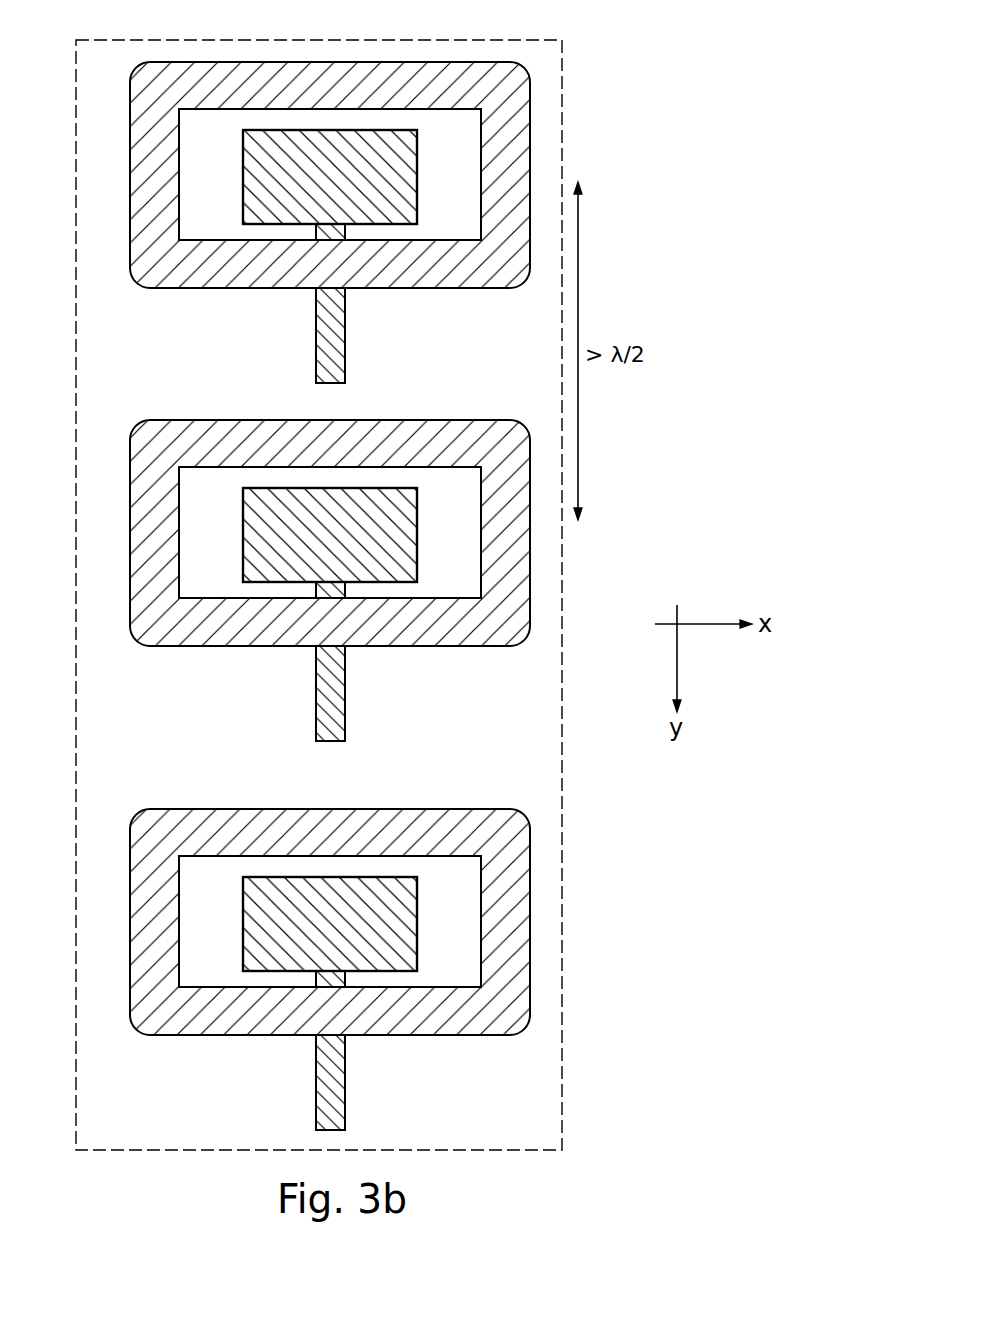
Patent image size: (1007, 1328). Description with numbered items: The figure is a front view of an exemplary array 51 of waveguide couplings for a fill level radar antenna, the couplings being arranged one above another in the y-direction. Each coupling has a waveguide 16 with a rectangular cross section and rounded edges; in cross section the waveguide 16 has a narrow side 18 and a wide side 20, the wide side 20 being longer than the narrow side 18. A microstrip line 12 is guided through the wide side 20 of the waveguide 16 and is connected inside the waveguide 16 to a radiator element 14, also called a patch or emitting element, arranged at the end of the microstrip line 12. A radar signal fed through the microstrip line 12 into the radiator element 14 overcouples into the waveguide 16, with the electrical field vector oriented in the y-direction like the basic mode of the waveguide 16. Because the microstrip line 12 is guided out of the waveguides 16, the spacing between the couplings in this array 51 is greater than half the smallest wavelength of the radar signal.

The microstrip line 12 is at (316, 338).
The radiator element 14 is at (390, 173).
The waveguide 16 is at (530, 152).
The narrow side 18 is at (531, 108).
The wide side 20 is at (420, 290).
The array of waveguide couplings 51 is at (578, 82).